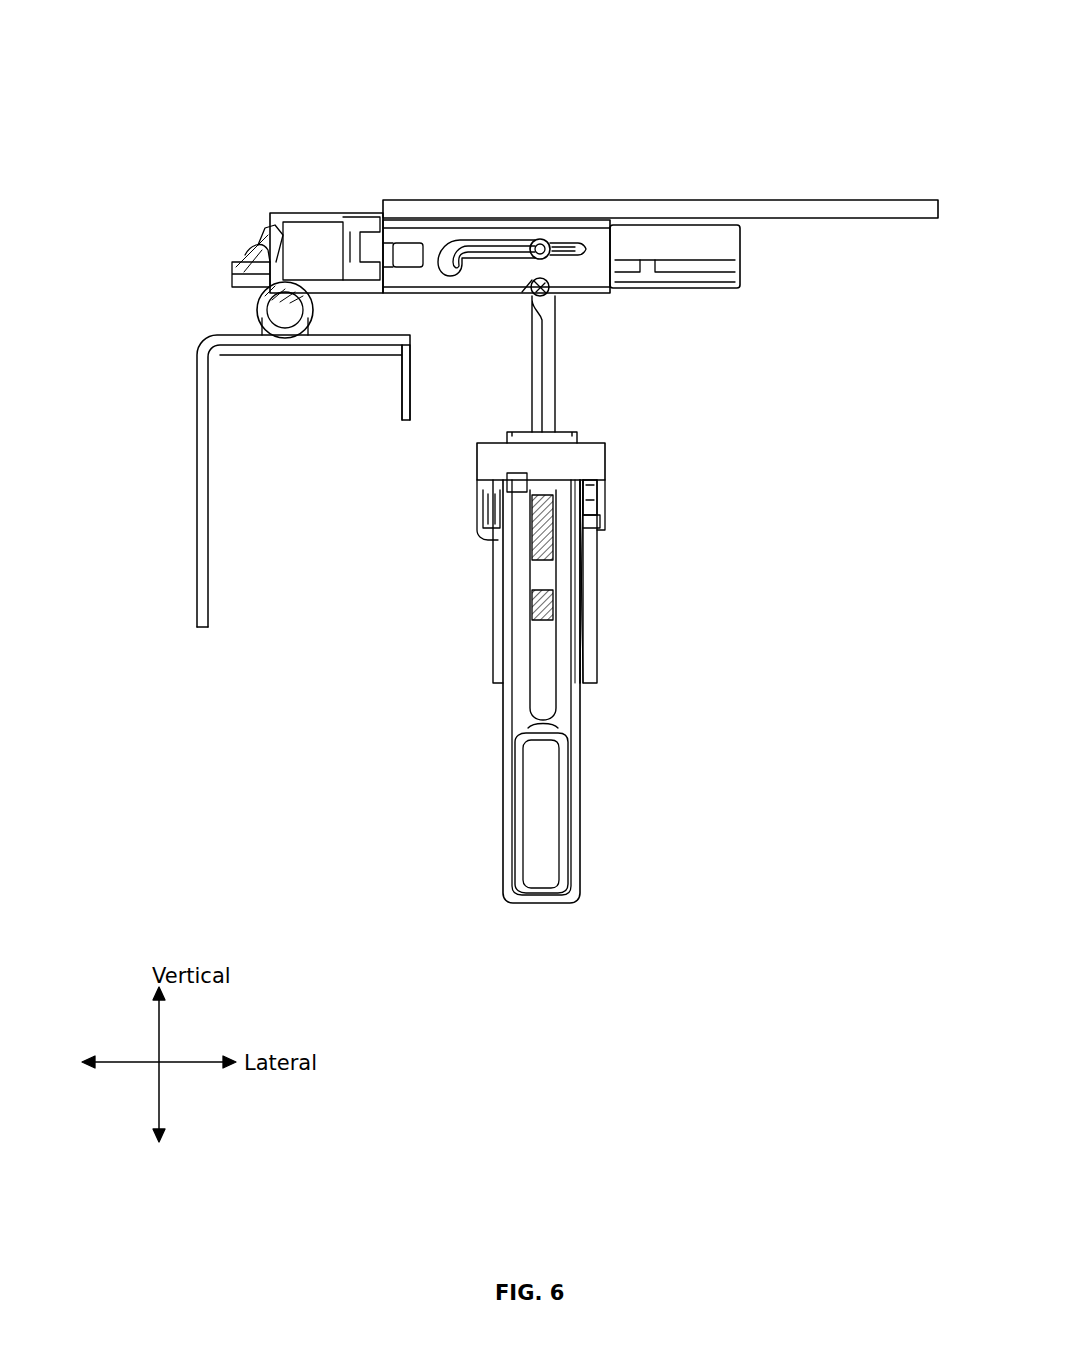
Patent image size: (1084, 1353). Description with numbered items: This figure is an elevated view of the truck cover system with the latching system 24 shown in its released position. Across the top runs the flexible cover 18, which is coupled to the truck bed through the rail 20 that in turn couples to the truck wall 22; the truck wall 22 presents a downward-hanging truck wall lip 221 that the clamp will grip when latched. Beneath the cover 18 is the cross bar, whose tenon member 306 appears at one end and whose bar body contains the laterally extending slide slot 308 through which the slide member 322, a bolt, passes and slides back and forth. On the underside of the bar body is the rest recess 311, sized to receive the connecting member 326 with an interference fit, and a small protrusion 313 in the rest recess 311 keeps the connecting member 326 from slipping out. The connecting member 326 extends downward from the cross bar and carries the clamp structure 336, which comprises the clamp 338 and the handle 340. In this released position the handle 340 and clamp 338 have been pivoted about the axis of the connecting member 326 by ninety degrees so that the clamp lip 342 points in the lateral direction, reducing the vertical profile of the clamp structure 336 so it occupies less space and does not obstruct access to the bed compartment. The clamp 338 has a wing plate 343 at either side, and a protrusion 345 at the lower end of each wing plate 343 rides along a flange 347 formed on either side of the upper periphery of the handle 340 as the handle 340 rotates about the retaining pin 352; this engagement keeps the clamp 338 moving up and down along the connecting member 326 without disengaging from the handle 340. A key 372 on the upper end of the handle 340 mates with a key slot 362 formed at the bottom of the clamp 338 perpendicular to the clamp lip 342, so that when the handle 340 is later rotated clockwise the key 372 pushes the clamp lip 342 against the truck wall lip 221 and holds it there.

The cover 18 is at (838, 205).
The rail 20 is at (305, 225).
The truck wall 22 is at (205, 340).
The latching system 24 is at (668, 98).
The truck wall lip 221 is at (402, 384).
The tenon member 306 is at (715, 245).
The slide slot 308 is at (480, 245).
The rest recess 311 is at (547, 296).
The small protrusion 313 is at (528, 296).
The slide member 322 is at (538, 238).
The connecting member 326 is at (543, 388).
The clamp structure 336 is at (812, 565).
The clamp 338 is at (756, 481).
The handle 340 is at (568, 672).
The clamp lip 342 is at (590, 467).
The wing plate 343 is at (600, 512).
The protrusion 345 is at (594, 527).
The flange 347 is at (592, 612).
The retaining pin 352 is at (555, 578).
The key slot 362 is at (512, 475).
The key 372 is at (480, 485).